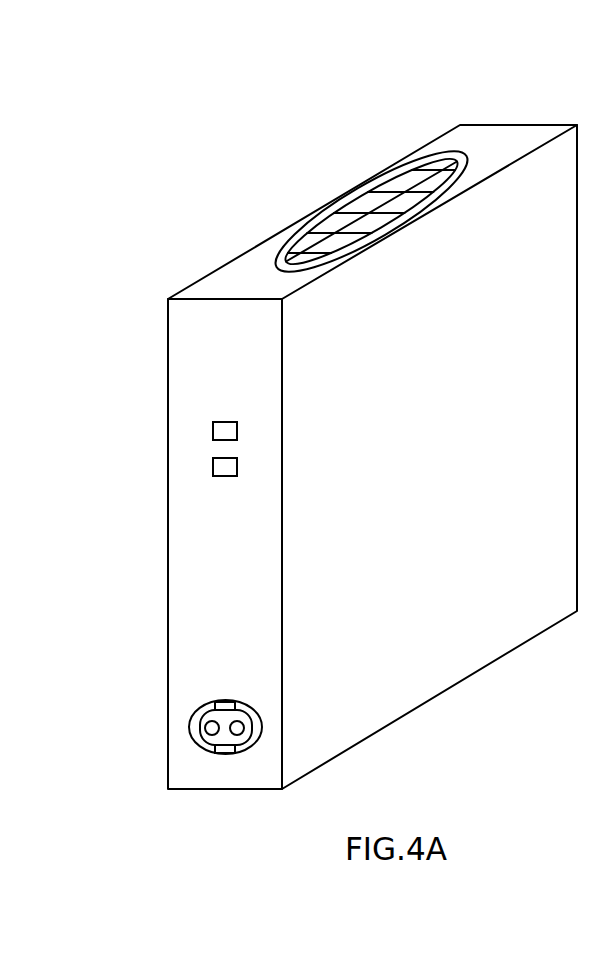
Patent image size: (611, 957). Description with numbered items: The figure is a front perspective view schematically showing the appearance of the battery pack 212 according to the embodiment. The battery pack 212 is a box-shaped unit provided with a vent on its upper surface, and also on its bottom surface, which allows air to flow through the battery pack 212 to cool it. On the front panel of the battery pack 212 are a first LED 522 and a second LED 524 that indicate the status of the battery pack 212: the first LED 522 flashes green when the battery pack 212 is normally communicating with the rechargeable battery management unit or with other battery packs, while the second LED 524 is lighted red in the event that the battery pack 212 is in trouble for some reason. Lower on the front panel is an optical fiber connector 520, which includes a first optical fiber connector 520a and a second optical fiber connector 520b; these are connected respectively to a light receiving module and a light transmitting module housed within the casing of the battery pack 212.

The battery pack 212 is at (523, 104).
The optical fiber connector 520 is at (197, 712).
The first optical fiber connector 520a is at (208, 753).
The second optical fiber connector 520b is at (237, 753).
The first LED 522 is at (213, 427).
The second LED 524 is at (213, 462).